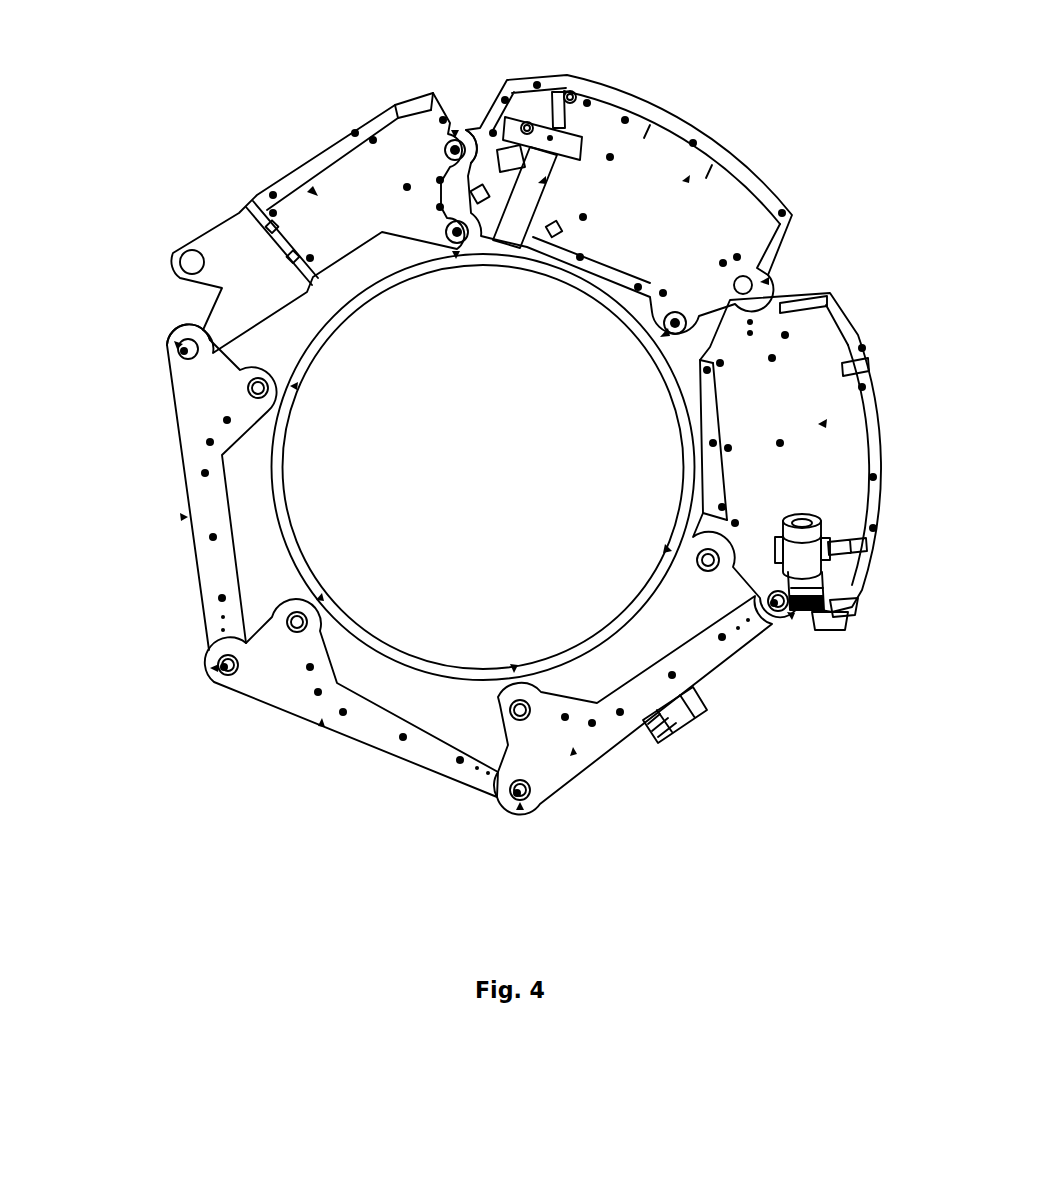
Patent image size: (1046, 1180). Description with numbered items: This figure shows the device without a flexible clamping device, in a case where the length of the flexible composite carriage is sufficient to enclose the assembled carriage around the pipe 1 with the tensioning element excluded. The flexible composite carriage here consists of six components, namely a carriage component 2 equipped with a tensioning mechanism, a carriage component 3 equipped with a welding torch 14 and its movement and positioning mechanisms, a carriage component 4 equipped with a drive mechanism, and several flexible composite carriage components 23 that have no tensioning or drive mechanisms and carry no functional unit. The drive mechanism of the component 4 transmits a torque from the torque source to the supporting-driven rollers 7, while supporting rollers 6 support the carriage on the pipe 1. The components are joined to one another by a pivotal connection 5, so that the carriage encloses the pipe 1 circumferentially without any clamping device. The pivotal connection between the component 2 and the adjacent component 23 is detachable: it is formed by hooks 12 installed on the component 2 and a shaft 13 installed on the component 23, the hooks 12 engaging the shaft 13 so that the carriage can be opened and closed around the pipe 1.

The pipe 1 is at (363, 630).
The carriage component equipped with tensioning mechanism 2 is at (316, 194).
The carriage component equipped with welding torch 3 is at (685, 180).
The carriage component equipped with drive mechanism 4 is at (822, 424).
The pivotal connection 5 is at (456, 136).
The supporting rollers 6 is at (456, 262).
The supporting-driven rollers 7 is at (670, 550).
The hooks 12 is at (133, 288).
The shaft 13 is at (181, 344).
The welding torch 14 is at (541, 180).
The flexible composite carriage component 23 is at (186, 517).